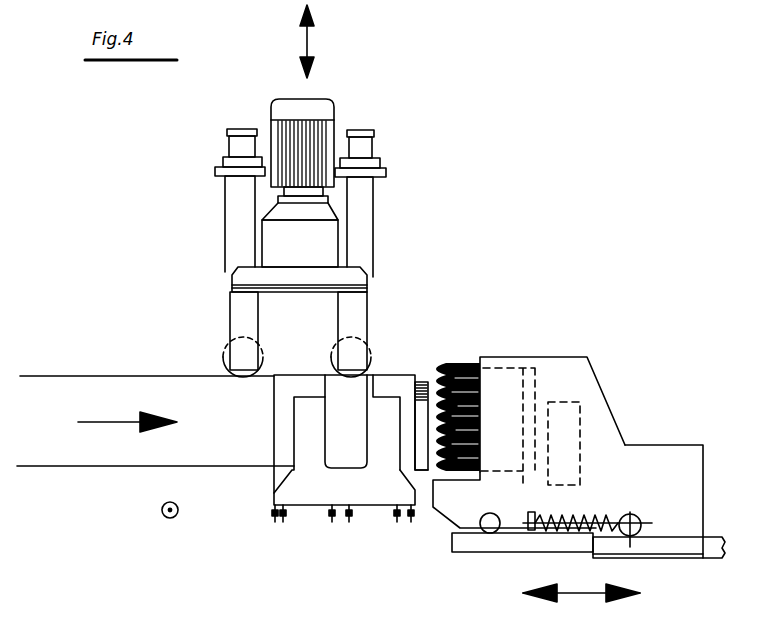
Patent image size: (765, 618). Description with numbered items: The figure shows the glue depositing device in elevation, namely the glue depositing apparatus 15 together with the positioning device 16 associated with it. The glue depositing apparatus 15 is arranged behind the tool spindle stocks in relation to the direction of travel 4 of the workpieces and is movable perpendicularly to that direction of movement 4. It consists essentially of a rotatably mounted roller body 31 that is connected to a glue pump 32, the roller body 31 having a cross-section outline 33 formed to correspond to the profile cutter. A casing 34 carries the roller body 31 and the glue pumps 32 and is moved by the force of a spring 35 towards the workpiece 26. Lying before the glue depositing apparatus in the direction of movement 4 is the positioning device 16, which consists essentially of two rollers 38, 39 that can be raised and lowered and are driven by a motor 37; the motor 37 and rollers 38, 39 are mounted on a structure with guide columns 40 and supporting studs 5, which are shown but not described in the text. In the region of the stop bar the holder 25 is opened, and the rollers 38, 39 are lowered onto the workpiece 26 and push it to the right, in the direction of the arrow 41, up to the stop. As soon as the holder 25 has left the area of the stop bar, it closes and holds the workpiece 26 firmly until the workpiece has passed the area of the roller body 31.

The direction of travel 4 is at (176, 517).
The mounting studs 5 is at (395, 513).
The glue depositing apparatus 15 is at (566, 435).
The positioning device 16 is at (293, 214).
The holder 25 is at (308, 474).
The workpiece 26 is at (90, 389).
The roller body 31 is at (448, 363).
The glue pump 32 is at (582, 423).
The cross-section outline 33 is at (432, 387).
The casing 34 is at (665, 468).
The spring 35 is at (587, 520).
The motor 37 is at (303, 107).
The roller 38 is at (332, 352).
The roller 39 is at (223, 352).
The guide columns 40 is at (232, 213).
The arrow 41 is at (110, 423).